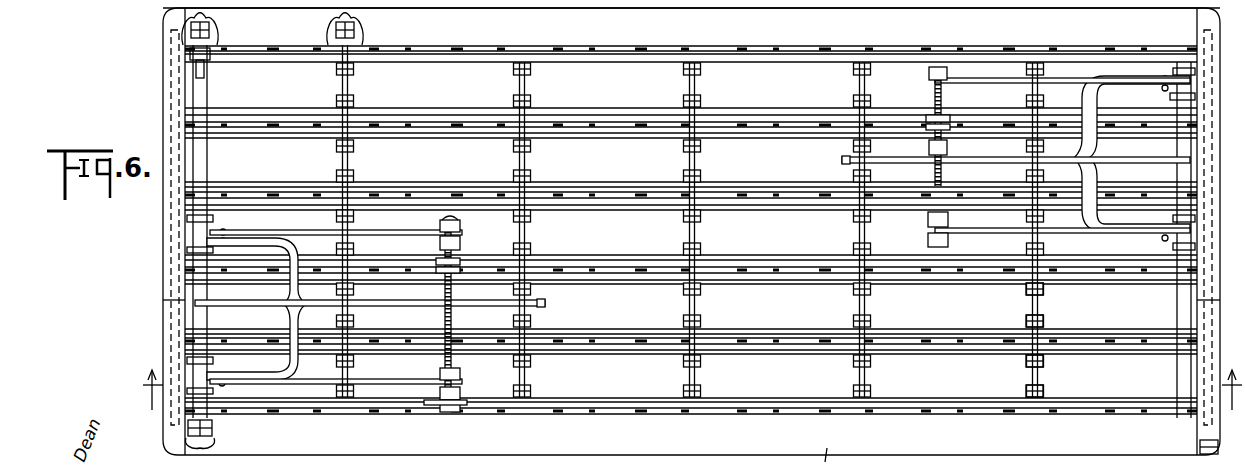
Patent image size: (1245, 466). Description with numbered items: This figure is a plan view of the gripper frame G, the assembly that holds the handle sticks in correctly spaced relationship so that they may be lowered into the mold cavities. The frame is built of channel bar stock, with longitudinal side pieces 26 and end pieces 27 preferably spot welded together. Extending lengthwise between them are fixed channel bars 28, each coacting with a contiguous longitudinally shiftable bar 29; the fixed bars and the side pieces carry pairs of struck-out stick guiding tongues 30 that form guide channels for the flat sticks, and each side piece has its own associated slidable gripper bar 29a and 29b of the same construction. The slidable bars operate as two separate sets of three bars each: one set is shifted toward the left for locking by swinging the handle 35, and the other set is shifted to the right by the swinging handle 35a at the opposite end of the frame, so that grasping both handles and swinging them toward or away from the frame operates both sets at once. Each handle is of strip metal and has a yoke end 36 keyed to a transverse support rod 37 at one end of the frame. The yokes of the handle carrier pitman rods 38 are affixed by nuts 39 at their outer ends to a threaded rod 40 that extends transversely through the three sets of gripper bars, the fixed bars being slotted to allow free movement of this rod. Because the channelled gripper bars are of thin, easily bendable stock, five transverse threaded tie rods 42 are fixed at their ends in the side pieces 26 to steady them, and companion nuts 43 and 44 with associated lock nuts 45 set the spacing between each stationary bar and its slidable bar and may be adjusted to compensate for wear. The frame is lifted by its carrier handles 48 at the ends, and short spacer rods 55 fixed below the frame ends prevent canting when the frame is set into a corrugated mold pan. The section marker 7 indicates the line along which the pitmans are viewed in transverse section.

The side piece 26 is at (691, 39).
The end piece 27 is at (165, 36).
The fixed channel bar 28 is at (789, 112).
The longitudinal shiftable bar 29 is at (757, 134).
The slidable gripper bar 29a is at (880, 55).
The slidable gripper bar 29b is at (903, 402).
The stick guiding tongue 30 is at (543, 121).
The swinging handle 35 is at (1000, 163).
The swinging handle 35a is at (491, 308).
The yoke end 36 is at (1099, 140).
The transverse support rod 37 is at (1185, 162).
The pitman rod 38 is at (404, 234).
The nut 39 is at (460, 228).
The threaded rod 40 is at (445, 292).
The transverse tie rod 42 is at (353, 87).
The companion nut 43 is at (1044, 322).
The companion nut 44 is at (1028, 360).
The lock nut 45 is at (1046, 313).
The carrier handle 48 is at (173, 226).
The spacer rod 55 is at (165, 330).
The gripper frame G is at (676, 152).
The section line 7 is at (684, 416).